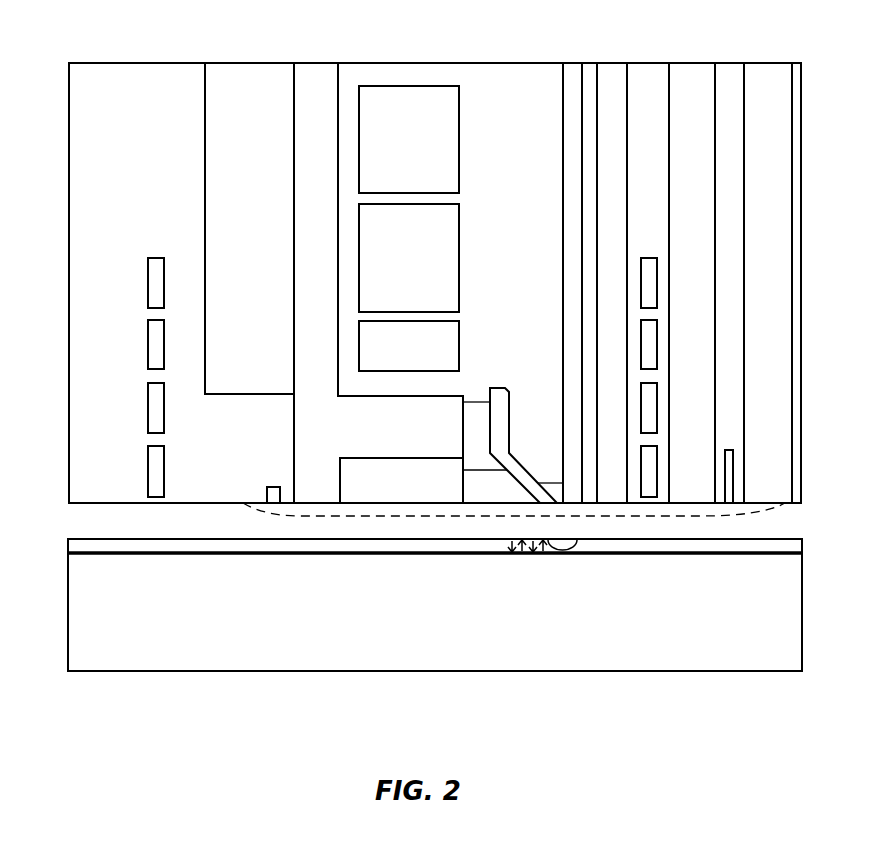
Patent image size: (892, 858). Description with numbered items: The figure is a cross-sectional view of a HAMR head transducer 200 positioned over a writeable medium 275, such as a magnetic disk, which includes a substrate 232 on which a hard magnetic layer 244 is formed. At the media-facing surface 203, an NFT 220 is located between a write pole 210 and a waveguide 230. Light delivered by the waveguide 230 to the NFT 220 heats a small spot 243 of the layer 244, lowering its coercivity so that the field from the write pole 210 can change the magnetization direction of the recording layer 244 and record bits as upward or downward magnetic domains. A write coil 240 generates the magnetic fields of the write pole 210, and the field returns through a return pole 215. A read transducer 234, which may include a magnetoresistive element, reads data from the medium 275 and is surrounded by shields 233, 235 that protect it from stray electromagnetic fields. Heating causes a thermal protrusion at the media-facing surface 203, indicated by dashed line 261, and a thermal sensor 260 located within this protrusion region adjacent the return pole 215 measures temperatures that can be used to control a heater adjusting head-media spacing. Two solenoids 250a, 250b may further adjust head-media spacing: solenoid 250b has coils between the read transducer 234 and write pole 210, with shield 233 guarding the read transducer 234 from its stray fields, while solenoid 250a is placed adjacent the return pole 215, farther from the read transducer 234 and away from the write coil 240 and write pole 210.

The HAMR head transducer 200 is at (107, 63).
The media-facing surface 203 is at (69, 503).
The write pole 210 is at (494, 393).
The return pole 215 is at (298, 411).
The NFT 220 is at (553, 495).
The waveguide 230 is at (562, 98).
The substrate 232 is at (455, 629).
The shield 233 is at (687, 63).
The read transducer 234 is at (729, 450).
The shield 235 is at (771, 63).
The write coil 240 is at (459, 264).
The spot 243 is at (566, 550).
The hard magnetic layer 244 is at (802, 539).
The solenoid 250a is at (148, 262).
The solenoid 250b is at (646, 259).
The thermal sensor 260 is at (267, 488).
The dashed line 261 is at (711, 511).
The writeable medium 275 is at (222, 684).